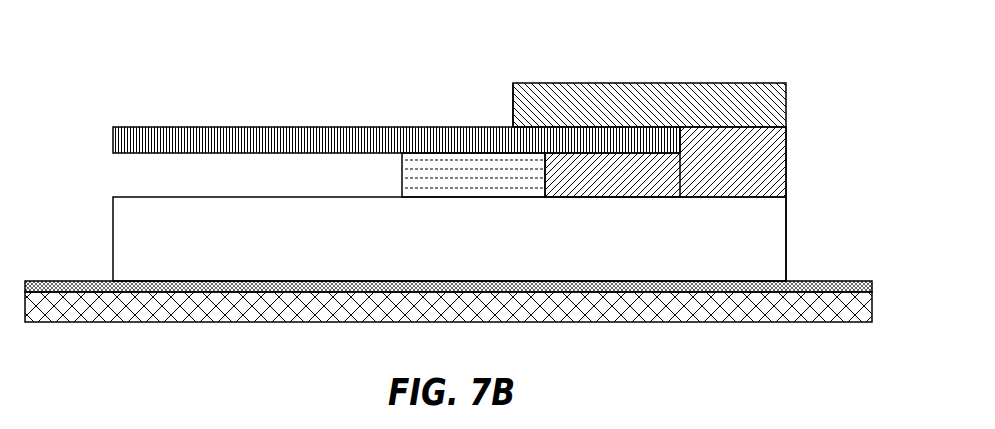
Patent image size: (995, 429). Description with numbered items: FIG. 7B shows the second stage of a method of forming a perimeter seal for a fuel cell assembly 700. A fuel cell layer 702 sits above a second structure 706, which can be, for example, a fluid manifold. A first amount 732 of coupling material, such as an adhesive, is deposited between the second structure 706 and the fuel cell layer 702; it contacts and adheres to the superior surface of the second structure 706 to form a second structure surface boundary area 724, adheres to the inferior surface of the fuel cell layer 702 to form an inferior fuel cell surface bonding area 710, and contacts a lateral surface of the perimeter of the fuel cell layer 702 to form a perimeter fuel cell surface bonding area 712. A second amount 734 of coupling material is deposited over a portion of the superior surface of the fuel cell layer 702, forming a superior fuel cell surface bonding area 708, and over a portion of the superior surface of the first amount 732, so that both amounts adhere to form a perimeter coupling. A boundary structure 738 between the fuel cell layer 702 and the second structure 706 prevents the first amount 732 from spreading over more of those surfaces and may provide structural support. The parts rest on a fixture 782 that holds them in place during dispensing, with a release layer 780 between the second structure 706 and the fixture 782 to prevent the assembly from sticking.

The device 700 is at (108, 43).
The fuel cell layer 702 is at (118, 140).
The second structure 706 is at (123, 240).
The superior fuel cell surface bonding area 708 is at (518, 114).
The inferior fuel cell surface bonding area 710 is at (604, 155).
The perimeter fuel cell surface bonding area 712 is at (685, 140).
The second structure surface boundary area 724 is at (775, 197).
The first amount of coupling material 732 is at (778, 160).
The second amount of coupling material 734 is at (776, 105).
The boundary structure 738 is at (403, 178).
The release layer 780 is at (811, 279).
The fixture 782 is at (715, 323).